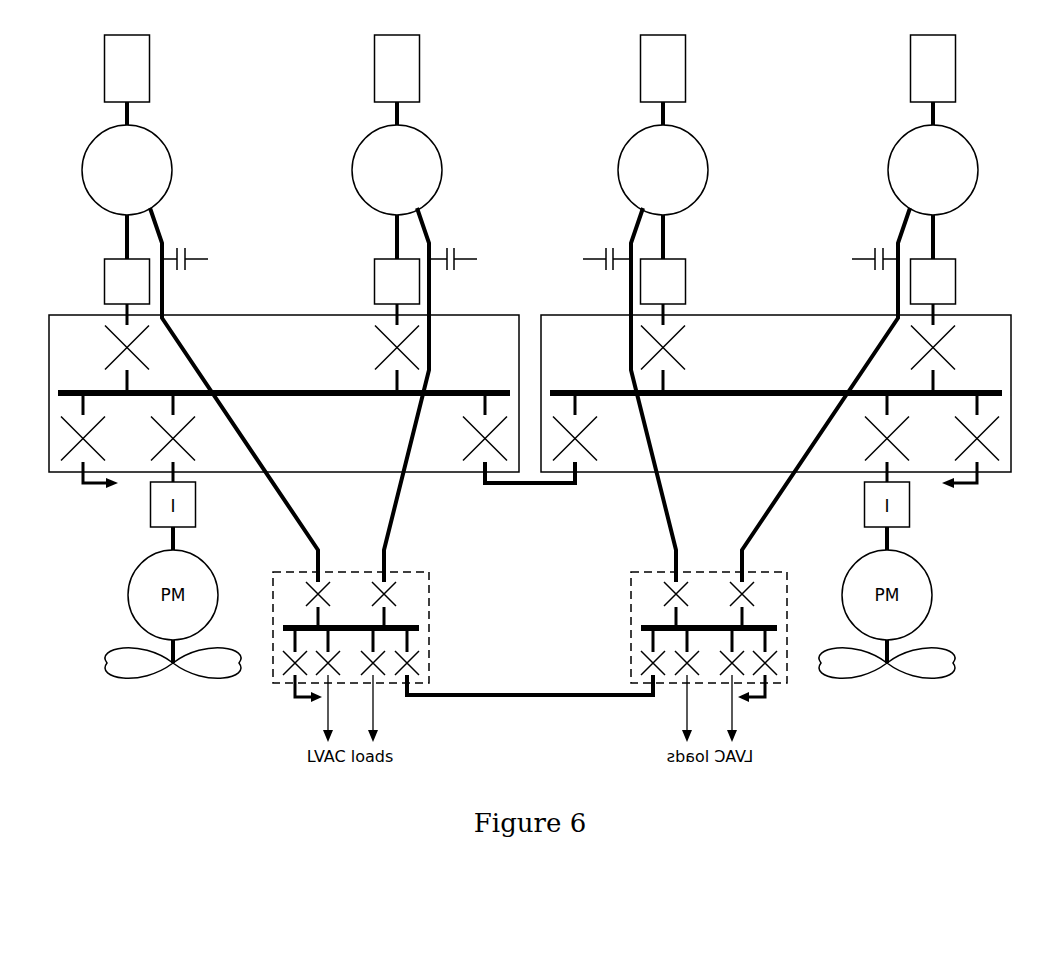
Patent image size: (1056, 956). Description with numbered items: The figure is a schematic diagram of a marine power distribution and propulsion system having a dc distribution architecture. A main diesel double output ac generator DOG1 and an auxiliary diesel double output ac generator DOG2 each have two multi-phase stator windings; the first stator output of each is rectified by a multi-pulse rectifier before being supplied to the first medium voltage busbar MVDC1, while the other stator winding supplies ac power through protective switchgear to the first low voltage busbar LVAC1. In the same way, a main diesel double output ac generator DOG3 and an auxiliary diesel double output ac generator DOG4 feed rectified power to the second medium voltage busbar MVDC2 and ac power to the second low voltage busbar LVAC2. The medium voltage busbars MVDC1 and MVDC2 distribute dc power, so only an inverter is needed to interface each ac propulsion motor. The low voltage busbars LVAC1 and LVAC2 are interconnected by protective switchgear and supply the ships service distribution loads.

The main diesel double output ac generator DOG1 is at (200, 308).
The auxiliary diesel double output ac generator DOG2 is at (414, 308).
The main diesel double output ac generator DOG3 is at (645, 308).
The auxiliary diesel double output ac generator DOG4 is at (860, 308).
The first medium voltage busbar MVDC1 is at (284, 401).
The second medium voltage busbar MVDC2 is at (776, 401).
The first low voltage busbar LVAC1 is at (380, 669).
The second low voltage busbar LVAC2 is at (679, 669).